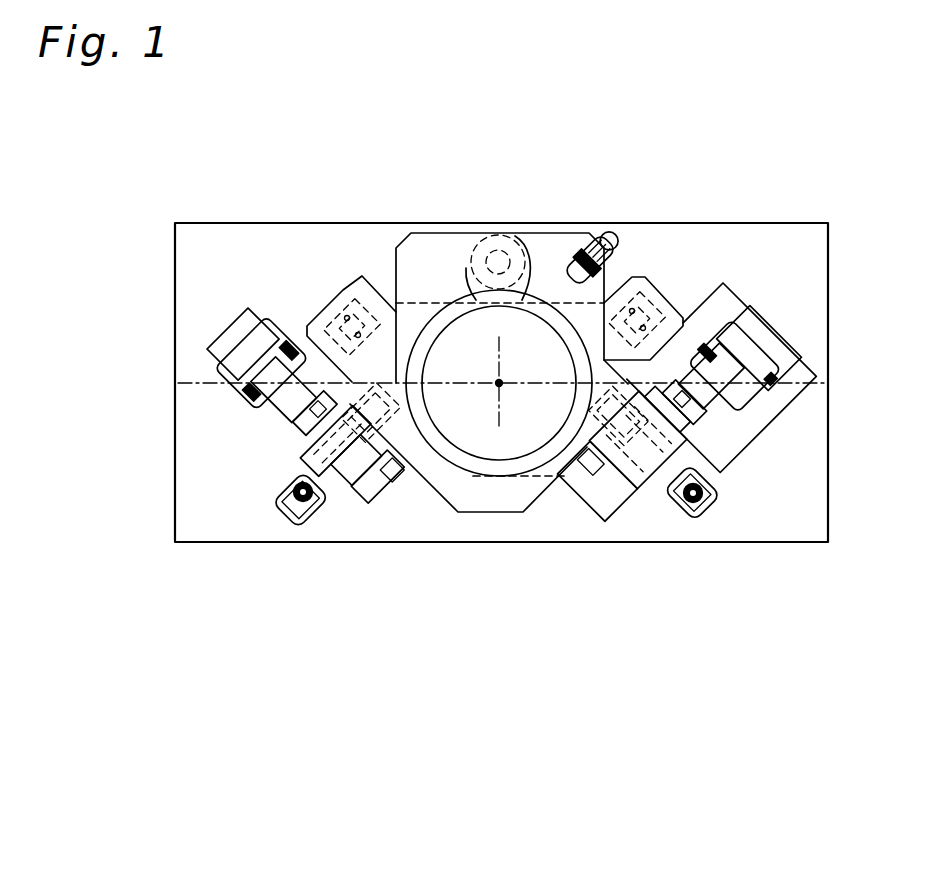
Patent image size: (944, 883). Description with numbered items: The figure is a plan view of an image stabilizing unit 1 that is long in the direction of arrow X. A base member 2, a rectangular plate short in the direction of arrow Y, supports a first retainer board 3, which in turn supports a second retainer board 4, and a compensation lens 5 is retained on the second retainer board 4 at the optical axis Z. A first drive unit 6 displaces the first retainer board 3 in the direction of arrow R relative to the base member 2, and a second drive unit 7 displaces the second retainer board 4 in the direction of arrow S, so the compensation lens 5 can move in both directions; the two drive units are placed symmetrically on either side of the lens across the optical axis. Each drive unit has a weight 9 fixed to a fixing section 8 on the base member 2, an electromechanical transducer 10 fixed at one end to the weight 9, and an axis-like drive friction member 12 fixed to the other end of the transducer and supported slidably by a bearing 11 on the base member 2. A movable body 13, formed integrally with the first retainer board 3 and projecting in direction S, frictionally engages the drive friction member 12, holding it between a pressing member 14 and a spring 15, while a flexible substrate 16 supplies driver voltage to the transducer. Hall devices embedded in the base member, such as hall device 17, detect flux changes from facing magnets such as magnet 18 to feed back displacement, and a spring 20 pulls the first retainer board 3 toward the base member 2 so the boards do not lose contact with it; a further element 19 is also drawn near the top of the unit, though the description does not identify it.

The image stabilizing unit 1 is at (187, 186).
The base member 2 is at (227, 223).
The first retainer board 3 is at (446, 234).
The second retainer board 4 is at (755, 300).
The compensation lens 5 is at (541, 300).
The first drive unit 6 is at (276, 414).
The second drive unit 7 is at (720, 414).
The fixing section 8 is at (212, 345).
The weight 9 is at (498, 374).
The electromechanical transducer 10 is at (292, 410).
The bearing 11 is at (310, 430).
The drive friction member 12 is at (288, 496).
The movable body 13 is at (355, 500).
The pressing member 14 is at (298, 510).
The spring 15 is at (326, 513).
The flexible substrate 16 is at (285, 392).
The hall device 17 is at (337, 292).
The magnet 18 is at (382, 300).
The locating boss 19 is at (490, 246).
The spring 20 is at (600, 242).